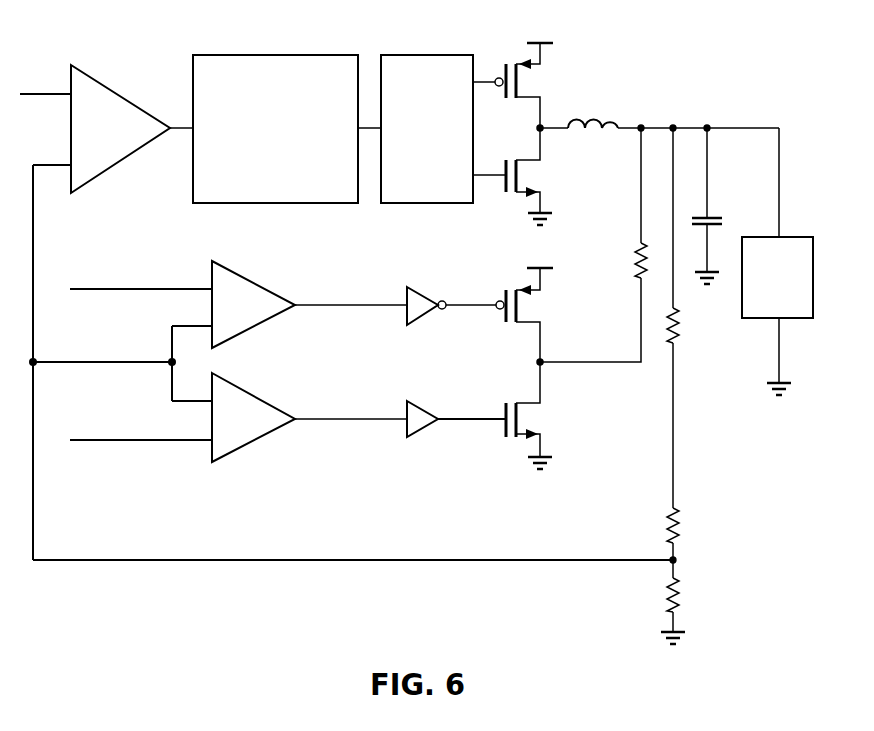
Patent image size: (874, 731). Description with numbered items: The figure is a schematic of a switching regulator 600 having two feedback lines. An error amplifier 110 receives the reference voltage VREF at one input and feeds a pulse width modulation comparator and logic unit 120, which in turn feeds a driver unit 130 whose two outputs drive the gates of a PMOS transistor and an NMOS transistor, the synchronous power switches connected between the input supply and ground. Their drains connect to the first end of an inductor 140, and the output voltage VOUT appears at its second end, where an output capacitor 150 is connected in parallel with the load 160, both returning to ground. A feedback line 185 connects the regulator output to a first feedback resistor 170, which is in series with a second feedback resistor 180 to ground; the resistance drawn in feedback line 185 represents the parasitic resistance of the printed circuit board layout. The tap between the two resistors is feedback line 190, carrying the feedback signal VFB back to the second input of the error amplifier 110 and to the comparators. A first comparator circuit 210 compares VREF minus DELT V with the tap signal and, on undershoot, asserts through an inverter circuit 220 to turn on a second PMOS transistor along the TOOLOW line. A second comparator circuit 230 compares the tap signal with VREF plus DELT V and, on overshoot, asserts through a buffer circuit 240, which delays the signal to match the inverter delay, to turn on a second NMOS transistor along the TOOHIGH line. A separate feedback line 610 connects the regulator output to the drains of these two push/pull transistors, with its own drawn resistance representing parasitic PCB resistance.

The error amplifier 110 is at (107, 85).
The pulse width modulation (PWM) comparator and logic unit 120 is at (240, 54).
The driver unit 130 is at (406, 54).
The inductor 140 is at (598, 121).
The output capacitor 150 is at (712, 216).
The load 160 is at (792, 235).
The first feedback resistor 170 is at (681, 517).
The second feedback resistor 180 is at (681, 587).
The feedback line 185 is at (674, 463).
The feedback line 190 is at (145, 562).
The first comparator circuit 210 is at (257, 283).
The inverter circuit 220 is at (418, 288).
The second comparator circuit 230 is at (257, 396).
The buffer circuit 240 is at (418, 401).
The switching regulator 600 is at (704, 36).
The feedback line 610 is at (640, 213).